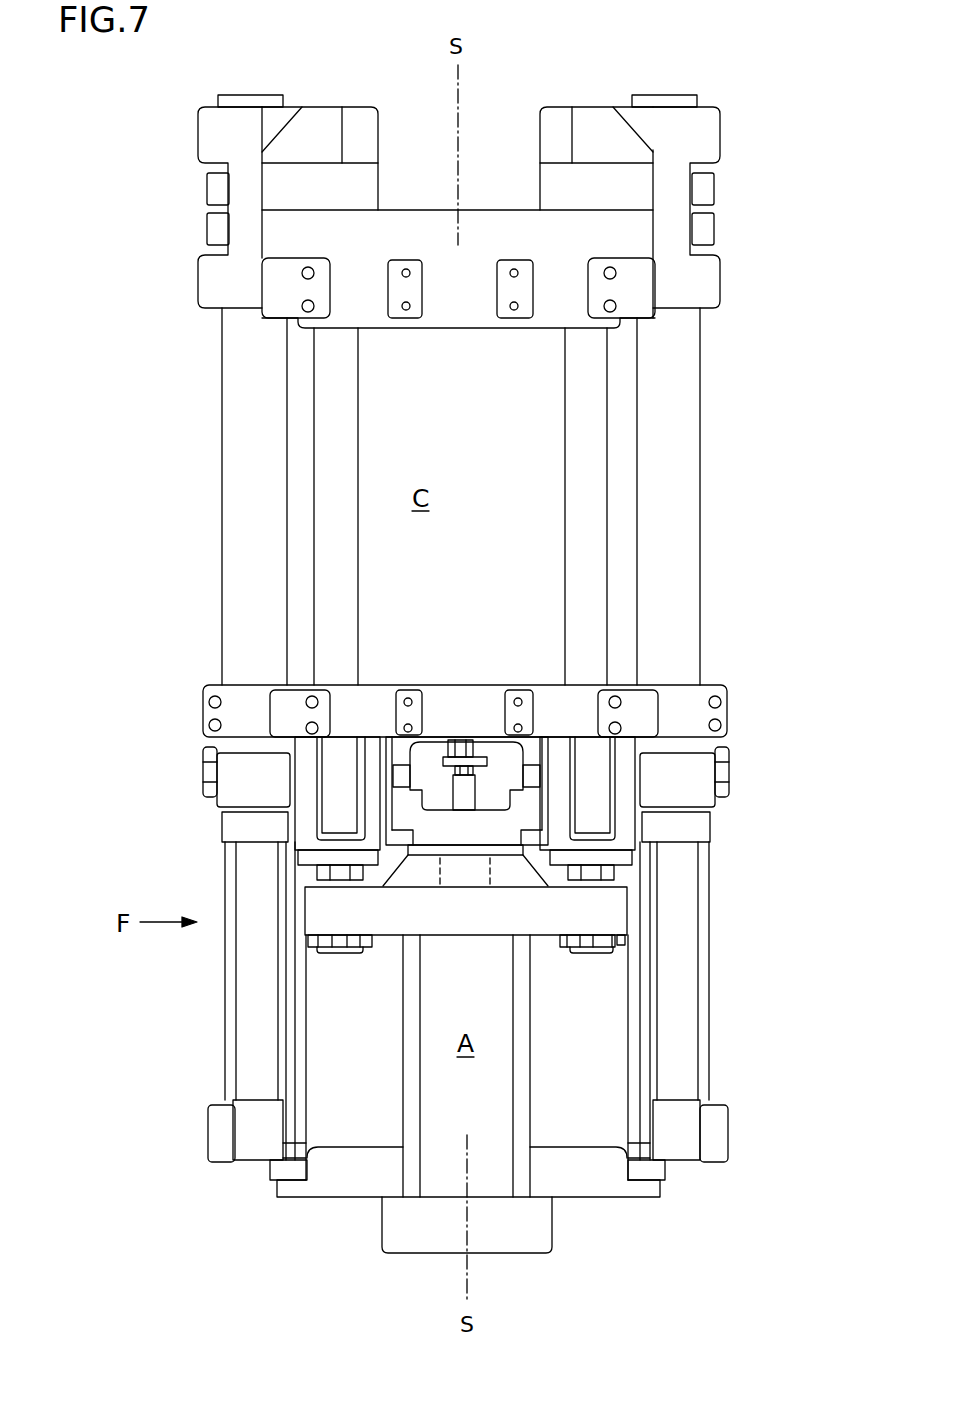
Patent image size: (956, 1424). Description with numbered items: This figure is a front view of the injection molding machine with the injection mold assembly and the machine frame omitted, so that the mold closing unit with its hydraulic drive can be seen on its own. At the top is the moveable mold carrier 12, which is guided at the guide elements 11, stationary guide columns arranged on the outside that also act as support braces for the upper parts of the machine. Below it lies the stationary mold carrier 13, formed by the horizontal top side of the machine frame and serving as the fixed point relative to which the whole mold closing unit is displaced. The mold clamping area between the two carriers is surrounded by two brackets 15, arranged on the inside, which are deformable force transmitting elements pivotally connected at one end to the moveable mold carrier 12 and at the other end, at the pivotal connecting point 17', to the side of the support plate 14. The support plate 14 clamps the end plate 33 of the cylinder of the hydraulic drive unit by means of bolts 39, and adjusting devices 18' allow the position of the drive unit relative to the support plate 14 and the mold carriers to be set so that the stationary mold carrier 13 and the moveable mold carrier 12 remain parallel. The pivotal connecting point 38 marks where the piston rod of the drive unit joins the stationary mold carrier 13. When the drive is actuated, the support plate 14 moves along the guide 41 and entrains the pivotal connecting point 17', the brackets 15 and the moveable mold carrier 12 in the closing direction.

The guide elements 11 is at (248, 476).
The moveable mold carrier 12 is at (373, 251).
The stationary mold carrier 13 is at (578, 727).
The support plate 14 is at (410, 925).
The bracket 15 is at (336, 370).
The pivotal connecting point 17' is at (678, 793).
The adjusting devices 18' is at (466, 982).
The end plate 33 is at (540, 1240).
The pivotal connecting point 38 is at (437, 846).
The bolts 39 is at (412, 1085).
The guide 41 is at (252, 748).